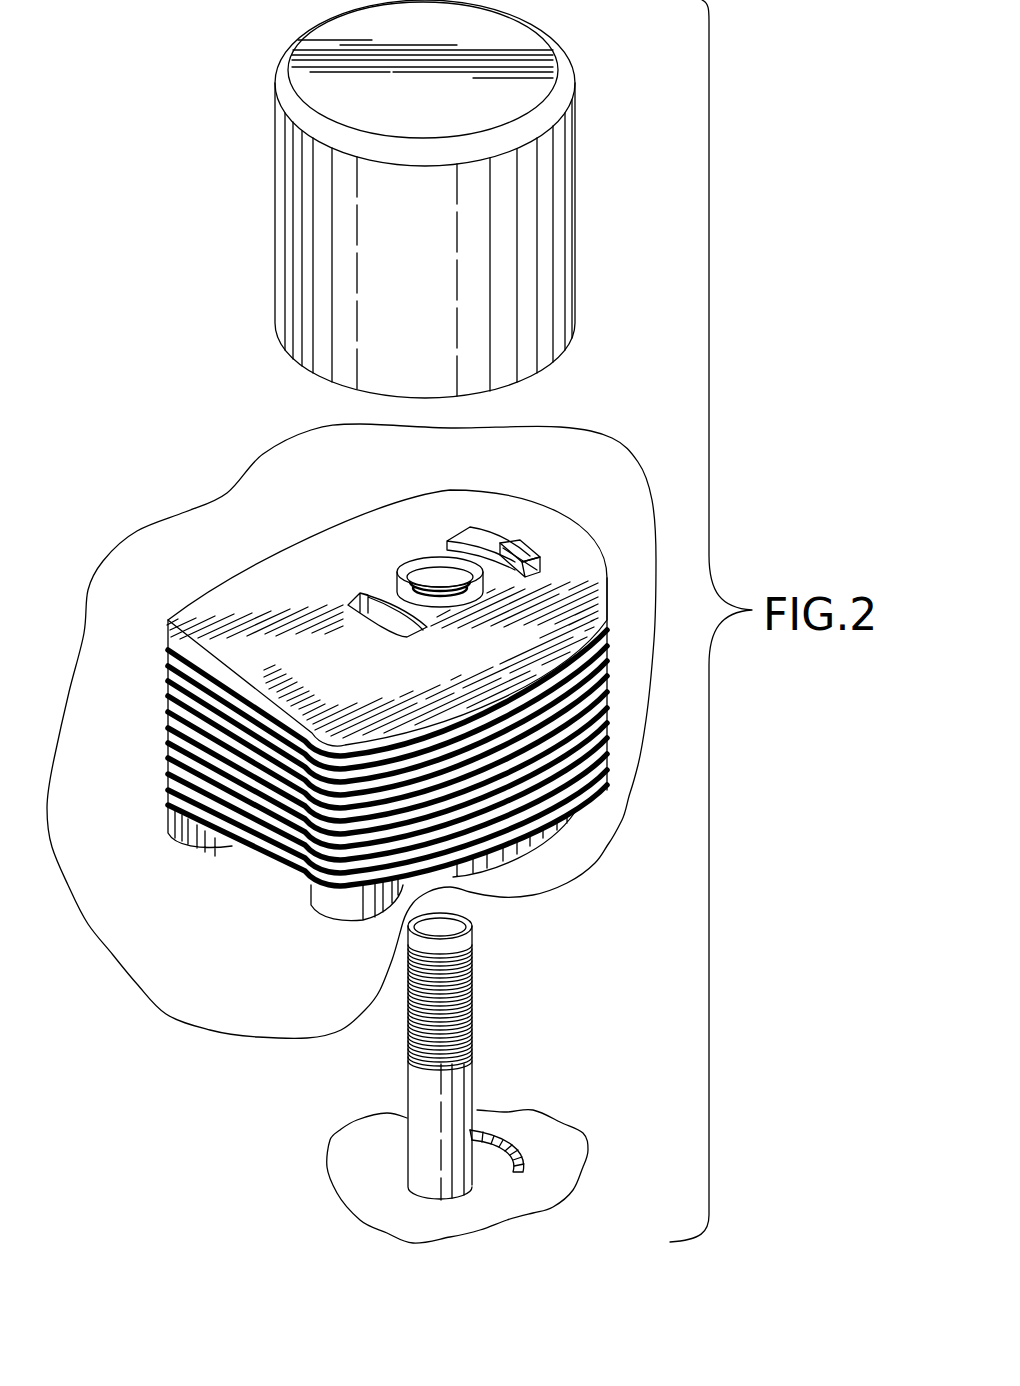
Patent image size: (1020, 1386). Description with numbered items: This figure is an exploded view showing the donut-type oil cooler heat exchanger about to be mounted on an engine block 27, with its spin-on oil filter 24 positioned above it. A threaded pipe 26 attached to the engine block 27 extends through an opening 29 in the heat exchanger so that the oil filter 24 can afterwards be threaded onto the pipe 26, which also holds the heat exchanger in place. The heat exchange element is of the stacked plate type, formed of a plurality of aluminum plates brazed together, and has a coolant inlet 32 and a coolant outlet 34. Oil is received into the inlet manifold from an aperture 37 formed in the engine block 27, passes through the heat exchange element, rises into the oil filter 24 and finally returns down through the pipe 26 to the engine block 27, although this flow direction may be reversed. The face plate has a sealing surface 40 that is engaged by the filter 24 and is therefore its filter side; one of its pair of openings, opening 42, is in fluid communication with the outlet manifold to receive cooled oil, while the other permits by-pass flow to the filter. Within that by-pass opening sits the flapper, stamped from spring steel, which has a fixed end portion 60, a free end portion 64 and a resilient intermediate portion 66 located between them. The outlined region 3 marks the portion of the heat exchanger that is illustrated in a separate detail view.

The spin-on oil filter 24 is at (282, 197).
The heat exchanger core assembly 3 is at (227, 493).
The opening 29 is at (428, 570).
The free end portion 64 is at (470, 527).
The resilient intermediate portion 66 is at (510, 542).
The fixed end portion 60 is at (537, 558).
The opening 42 is at (359, 570).
The sealing surface 40 is at (299, 676).
The coolant inlet 32 is at (181, 862).
The coolant outlet 34 is at (330, 946).
The threaded pipe 26 is at (418, 1097).
The aperture 37 is at (508, 1140).
The engine block 27 is at (467, 1222).